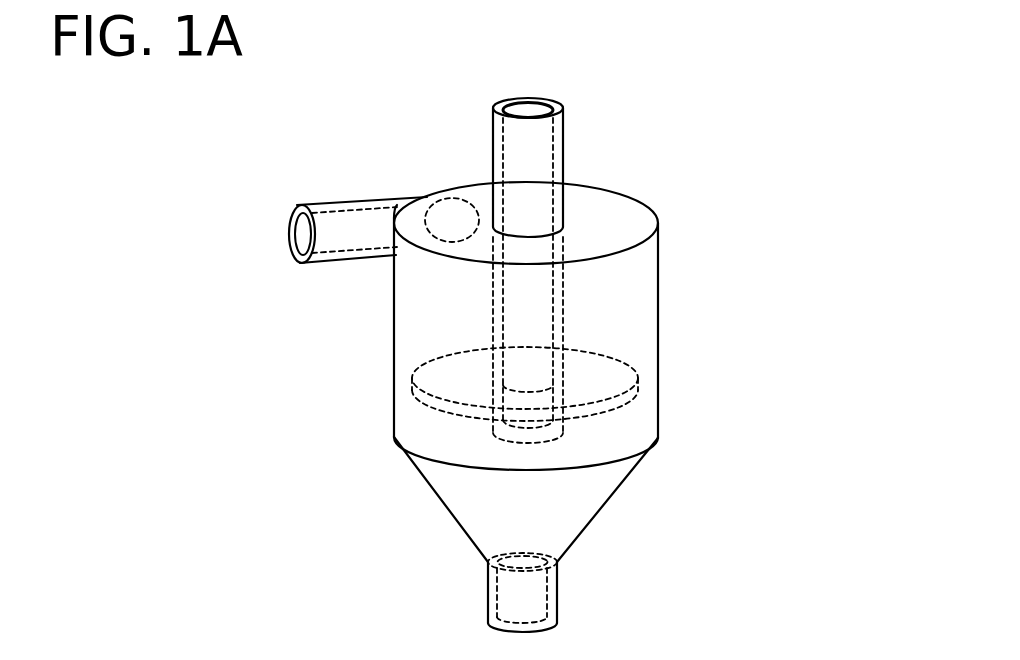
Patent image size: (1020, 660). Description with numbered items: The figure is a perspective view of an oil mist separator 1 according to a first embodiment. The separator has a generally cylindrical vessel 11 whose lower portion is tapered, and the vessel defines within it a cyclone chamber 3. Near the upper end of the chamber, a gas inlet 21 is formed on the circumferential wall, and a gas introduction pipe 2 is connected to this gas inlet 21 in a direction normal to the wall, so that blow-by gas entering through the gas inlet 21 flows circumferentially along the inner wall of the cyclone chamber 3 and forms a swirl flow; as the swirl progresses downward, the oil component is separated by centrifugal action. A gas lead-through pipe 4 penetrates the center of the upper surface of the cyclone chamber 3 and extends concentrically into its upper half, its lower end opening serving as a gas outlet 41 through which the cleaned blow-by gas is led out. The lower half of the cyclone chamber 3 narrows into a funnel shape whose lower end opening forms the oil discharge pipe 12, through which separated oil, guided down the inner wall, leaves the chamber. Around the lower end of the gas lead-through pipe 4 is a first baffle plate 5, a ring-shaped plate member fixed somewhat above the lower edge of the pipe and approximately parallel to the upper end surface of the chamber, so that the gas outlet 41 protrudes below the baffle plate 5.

The oil mist separator 1 is at (415, 510).
The cylindrical vessel 11 is at (393, 432).
The oil discharge pipe 12 is at (557, 584).
The gas introduction pipe 2 is at (350, 260).
The gas inlet 21 is at (452, 218).
The cyclone chamber 3 is at (610, 272).
The gas lead-through pipe 4 is at (563, 146).
The gas outlet 41 is at (530, 440).
The first baffle plate 5 is at (603, 386).